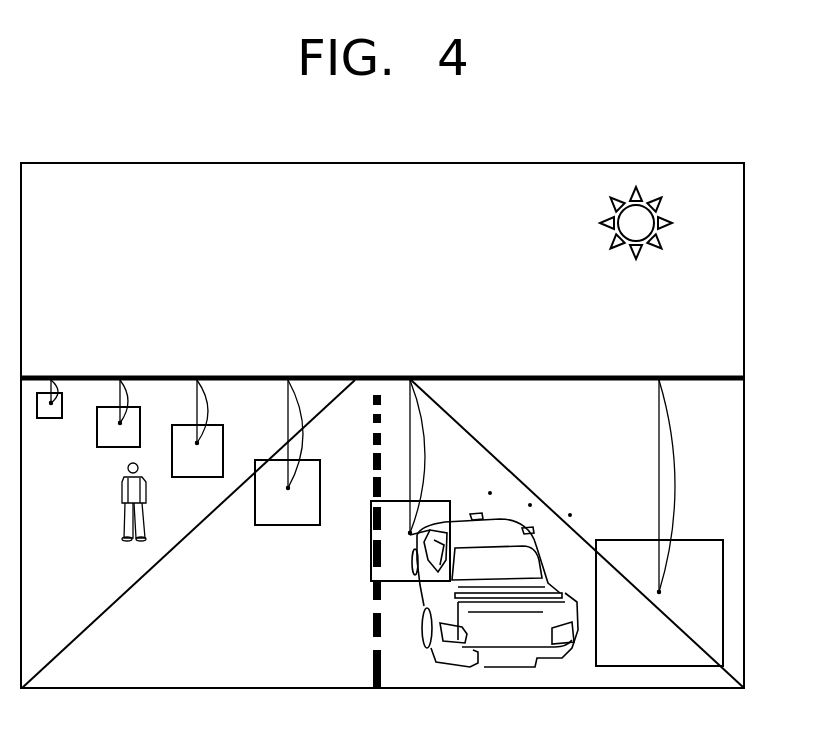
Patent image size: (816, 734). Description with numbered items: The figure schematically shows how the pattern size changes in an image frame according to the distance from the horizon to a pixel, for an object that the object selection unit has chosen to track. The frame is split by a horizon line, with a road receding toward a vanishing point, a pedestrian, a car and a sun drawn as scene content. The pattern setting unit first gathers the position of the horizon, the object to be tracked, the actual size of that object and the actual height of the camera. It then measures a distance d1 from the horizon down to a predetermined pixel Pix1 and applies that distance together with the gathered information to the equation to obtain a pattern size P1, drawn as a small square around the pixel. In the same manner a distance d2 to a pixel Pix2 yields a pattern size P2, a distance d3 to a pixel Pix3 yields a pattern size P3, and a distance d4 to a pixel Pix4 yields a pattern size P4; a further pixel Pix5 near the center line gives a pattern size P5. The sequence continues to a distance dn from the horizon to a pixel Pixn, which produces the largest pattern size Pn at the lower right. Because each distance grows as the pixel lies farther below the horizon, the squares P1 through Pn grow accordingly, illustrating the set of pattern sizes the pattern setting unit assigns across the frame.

The pattern size P1 is at (50, 420).
The pattern size P2 is at (118, 441).
The pattern size P3 is at (197, 465).
The pattern size P4 is at (287, 506).
The pattern size P5 is at (410, 554).
The pattern size Pn is at (659, 616).
The predetermined pixel Pix1 is at (64, 413).
The predetermined pixel Pix2 is at (137, 435).
The predetermined pixel Pix3 is at (201, 459).
The predetermined pixel Pix4 is at (289, 502).
The predetermined pixel Pix5 is at (399, 544).
The predetermined pixel Pixn is at (680, 597).
The distance d1 is at (58, 392).
The distance d2 is at (138, 402).
The distance d3 is at (217, 412).
The distance d4 is at (310, 435).
The distance dn is at (683, 487).